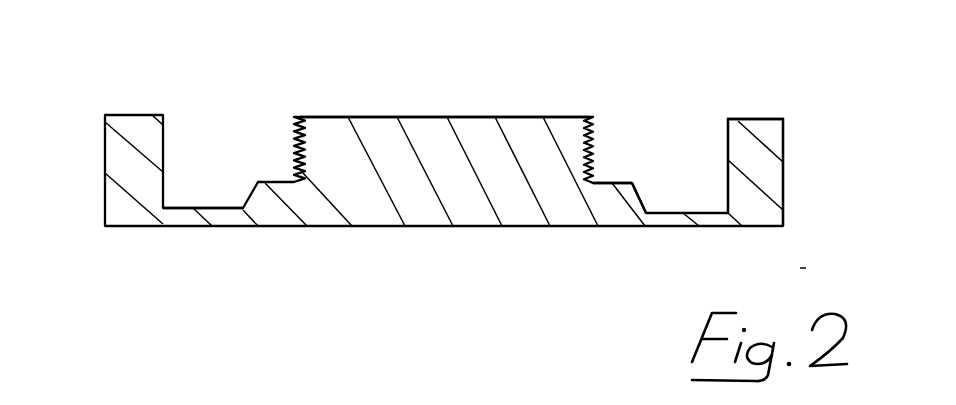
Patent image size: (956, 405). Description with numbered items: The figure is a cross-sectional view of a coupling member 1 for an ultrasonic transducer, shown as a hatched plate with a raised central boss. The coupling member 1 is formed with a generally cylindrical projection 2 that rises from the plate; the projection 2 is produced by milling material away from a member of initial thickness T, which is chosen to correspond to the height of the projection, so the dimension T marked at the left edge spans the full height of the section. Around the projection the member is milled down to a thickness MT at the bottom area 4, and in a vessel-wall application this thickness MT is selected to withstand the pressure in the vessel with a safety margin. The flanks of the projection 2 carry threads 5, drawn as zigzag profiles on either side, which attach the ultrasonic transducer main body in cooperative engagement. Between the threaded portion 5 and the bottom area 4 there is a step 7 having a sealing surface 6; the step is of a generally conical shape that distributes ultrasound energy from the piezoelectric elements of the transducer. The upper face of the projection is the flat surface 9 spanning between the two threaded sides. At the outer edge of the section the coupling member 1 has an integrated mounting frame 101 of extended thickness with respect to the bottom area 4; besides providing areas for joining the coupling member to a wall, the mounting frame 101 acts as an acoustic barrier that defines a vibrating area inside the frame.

The coupling member 1 is at (652, 56).
The projection 2 is at (580, 140).
The bottom area 4 is at (213, 208).
The threads 5 is at (292, 143).
The sealing surface 6 is at (617, 183).
The step 7 is at (642, 195).
The top surface 9 is at (525, 117).
The mounting frame 101 is at (757, 118).
The initial thickness T is at (90, 223).
The milled thickness MT is at (188, 182).